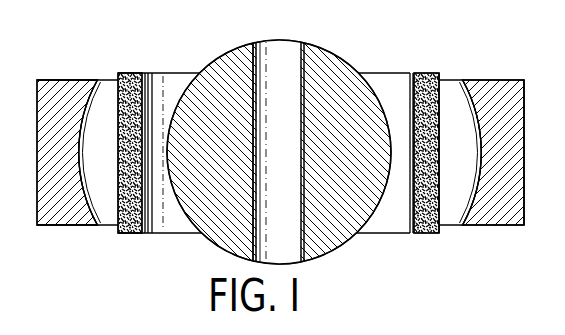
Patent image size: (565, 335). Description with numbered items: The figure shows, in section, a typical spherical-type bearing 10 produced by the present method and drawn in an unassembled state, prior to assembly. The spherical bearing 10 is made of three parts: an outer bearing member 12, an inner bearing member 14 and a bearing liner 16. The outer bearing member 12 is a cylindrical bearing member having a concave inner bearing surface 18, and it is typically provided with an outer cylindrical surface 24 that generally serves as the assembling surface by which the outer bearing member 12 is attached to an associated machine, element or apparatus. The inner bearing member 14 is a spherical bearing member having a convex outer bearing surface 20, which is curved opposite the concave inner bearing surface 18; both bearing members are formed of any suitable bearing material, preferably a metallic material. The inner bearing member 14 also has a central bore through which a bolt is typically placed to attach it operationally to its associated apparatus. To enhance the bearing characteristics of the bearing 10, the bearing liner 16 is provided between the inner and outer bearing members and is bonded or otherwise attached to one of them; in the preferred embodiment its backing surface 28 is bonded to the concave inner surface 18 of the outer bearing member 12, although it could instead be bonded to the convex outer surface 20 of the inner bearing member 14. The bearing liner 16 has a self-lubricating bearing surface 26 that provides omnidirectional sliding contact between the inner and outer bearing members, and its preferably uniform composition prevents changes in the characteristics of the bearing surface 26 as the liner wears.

The spherical bearing 10 is at (516, 26).
The outer bearing member 12 is at (505, 176).
The inner bearing member 14 is at (327, 69).
The bearing liner 16 is at (436, 73).
The concave inner bearing surface 18 is at (90, 100).
The convex outer bearing surface 20 is at (212, 63).
The outer cylindrical surface 24 is at (523, 98).
The self-lubricating bearing surface 26 is at (413, 200).
The backing surface 28 is at (439, 200).